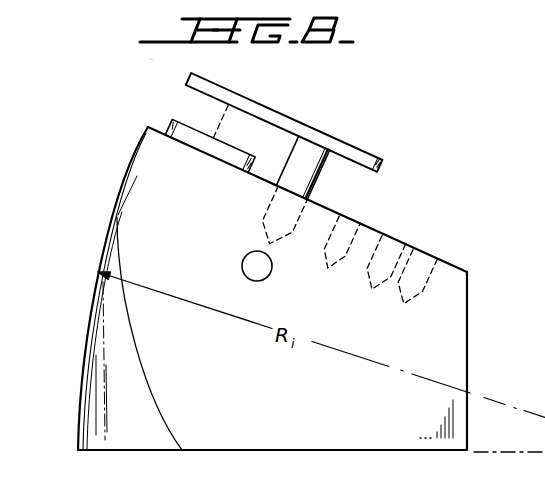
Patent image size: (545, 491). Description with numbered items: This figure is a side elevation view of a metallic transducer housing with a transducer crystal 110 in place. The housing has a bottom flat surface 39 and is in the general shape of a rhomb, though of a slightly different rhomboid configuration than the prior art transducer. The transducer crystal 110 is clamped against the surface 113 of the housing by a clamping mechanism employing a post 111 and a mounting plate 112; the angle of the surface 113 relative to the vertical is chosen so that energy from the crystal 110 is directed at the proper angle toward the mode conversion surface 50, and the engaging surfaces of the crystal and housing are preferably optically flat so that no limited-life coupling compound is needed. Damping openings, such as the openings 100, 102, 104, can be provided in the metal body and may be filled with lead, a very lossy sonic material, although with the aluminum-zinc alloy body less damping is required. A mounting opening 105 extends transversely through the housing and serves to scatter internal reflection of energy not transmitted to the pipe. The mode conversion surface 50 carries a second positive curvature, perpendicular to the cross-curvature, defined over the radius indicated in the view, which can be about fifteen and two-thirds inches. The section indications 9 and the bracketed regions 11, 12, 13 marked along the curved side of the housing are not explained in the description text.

The section line 9- 9 is at (128, 89).
The first layer 11 is at (72, 303).
The second layer 12 is at (66, 357).
The third layer 13 is at (65, 402).
The bottom flat surface 39 is at (272, 452).
The mode conversion surface 50 is at (102, 240).
The damping opening 100 is at (362, 216).
The damping opening 102 is at (408, 255).
The damping opening 104 is at (433, 262).
The mounting opening 105 is at (250, 262).
The transducer crystal 110 is at (228, 141).
The post 111 is at (315, 177).
The mounting plate 112 is at (265, 106).
The surface 113 is at (327, 206).